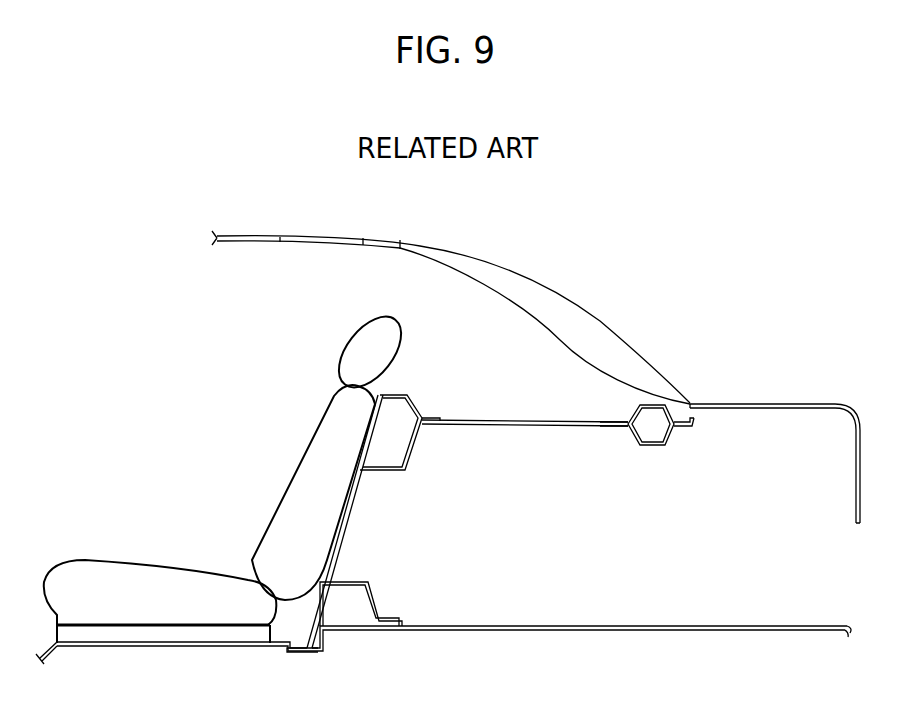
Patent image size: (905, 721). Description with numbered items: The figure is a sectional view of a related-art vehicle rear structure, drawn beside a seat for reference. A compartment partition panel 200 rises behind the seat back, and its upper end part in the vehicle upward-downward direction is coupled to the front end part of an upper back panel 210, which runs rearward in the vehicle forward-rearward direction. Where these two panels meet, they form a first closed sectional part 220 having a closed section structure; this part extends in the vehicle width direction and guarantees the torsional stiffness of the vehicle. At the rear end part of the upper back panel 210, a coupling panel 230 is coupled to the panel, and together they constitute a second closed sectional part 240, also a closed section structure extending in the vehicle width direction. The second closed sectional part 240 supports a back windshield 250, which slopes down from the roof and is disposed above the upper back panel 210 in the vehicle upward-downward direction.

The compartment partition panel 200 is at (346, 528).
The upper back panel 210 is at (527, 428).
The first closed sectional part 220 is at (400, 392).
The coupling panel 230 is at (652, 447).
The second closed sectional part 240 is at (634, 405).
The back windshield 250 is at (562, 312).